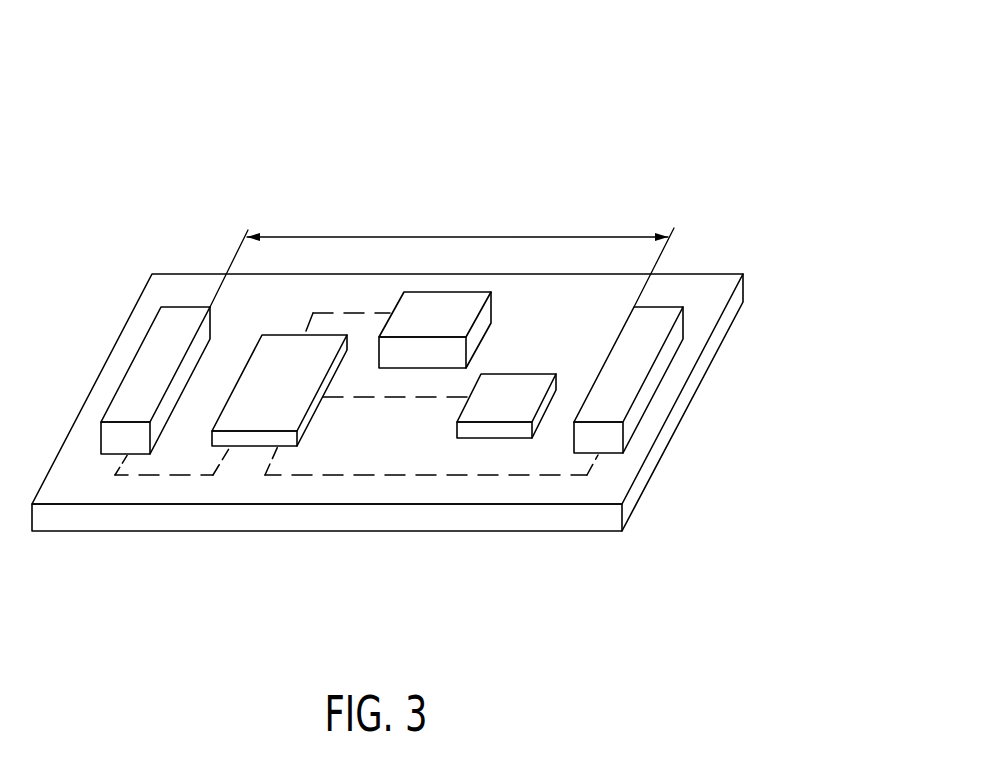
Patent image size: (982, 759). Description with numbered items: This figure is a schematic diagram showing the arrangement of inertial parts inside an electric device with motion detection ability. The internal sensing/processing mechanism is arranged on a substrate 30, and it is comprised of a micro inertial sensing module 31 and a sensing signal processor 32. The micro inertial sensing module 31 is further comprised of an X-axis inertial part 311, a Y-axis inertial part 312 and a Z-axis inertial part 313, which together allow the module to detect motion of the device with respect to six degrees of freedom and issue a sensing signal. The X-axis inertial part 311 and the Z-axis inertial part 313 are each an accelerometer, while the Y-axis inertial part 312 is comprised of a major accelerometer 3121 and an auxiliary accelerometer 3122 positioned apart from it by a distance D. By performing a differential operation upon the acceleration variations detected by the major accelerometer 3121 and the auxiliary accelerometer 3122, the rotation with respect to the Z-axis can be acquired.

The substrate 30 is at (716, 290).
The micro inertial sensing module 31 is at (403, 316).
The X-axis inertial part 311 is at (412, 324).
The Y-axis inertial part 312 is at (403, 240).
The major accelerometer 3121 is at (178, 318).
The auxiliary accelerometer 3122 is at (658, 315).
The Z-axis inertial part 313 is at (497, 412).
The sensing signal processor 32 is at (250, 420).